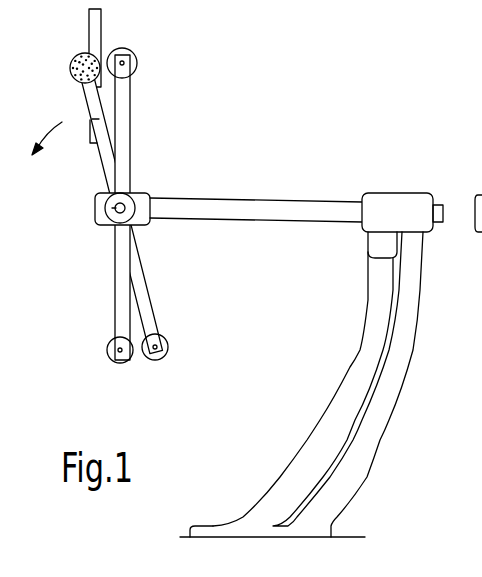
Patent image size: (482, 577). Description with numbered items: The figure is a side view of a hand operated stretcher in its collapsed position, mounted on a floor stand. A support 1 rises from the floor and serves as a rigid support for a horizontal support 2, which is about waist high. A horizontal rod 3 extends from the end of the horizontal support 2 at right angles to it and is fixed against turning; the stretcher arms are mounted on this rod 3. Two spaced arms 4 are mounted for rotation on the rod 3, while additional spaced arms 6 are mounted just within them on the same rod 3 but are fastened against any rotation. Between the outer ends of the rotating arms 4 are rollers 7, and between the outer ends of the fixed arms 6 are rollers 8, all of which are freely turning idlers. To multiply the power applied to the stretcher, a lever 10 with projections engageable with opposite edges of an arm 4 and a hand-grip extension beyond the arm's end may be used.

The support 1 is at (350, 367).
The horizontal support 2 is at (268, 205).
The horizontal rod 3 is at (122, 207).
The arms 4 is at (147, 293).
The arms 6 is at (117, 282).
The rollers 7 is at (75, 58).
The rollers 8 is at (137, 63).
The lever 10 is at (102, 30).